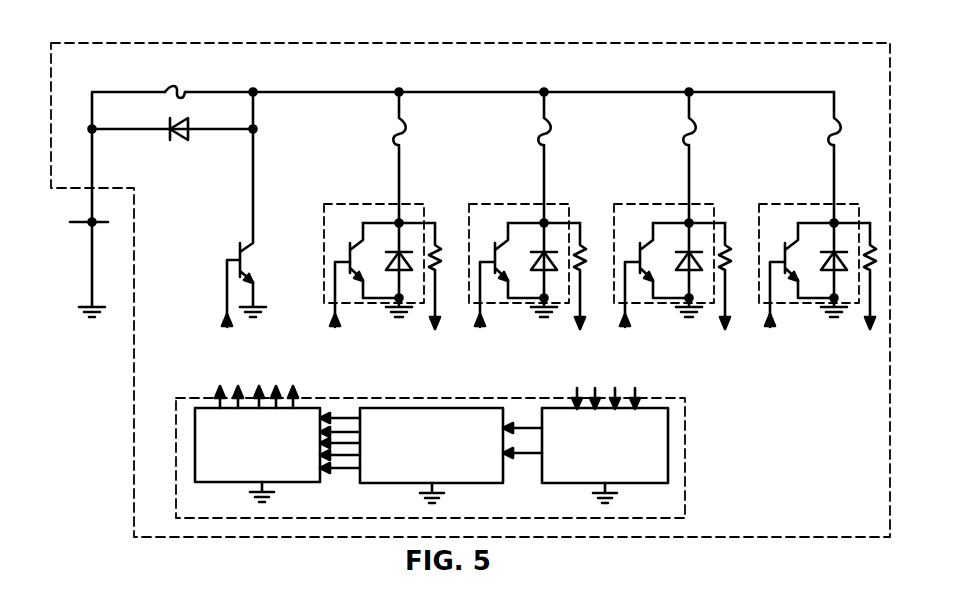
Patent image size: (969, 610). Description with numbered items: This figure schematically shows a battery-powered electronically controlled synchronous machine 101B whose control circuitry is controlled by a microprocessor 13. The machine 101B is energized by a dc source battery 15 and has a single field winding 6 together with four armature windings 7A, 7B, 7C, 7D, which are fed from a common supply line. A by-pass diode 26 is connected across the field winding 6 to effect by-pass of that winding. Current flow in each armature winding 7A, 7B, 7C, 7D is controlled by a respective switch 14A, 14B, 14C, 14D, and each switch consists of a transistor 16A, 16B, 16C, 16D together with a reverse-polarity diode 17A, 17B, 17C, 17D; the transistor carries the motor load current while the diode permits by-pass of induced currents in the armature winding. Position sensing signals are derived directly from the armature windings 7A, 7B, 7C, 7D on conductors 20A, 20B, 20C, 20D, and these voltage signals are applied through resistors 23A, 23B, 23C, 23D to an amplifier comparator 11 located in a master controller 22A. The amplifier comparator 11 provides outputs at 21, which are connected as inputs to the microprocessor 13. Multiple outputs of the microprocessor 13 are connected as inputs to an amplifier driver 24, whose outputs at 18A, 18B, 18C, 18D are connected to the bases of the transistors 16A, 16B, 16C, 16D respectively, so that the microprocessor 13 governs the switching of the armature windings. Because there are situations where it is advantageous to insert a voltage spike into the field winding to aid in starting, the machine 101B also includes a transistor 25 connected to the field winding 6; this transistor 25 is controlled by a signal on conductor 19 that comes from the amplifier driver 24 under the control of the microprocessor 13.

The field winding 6 is at (184, 89).
The by-pass diode 26 is at (185, 136).
The battery 15 is at (75, 224).
The transistor 25 is at (249, 246).
The conductor 19 is at (225, 287).
The armature winding 7A is at (402, 141).
The armature winding 7B is at (547, 141).
The armature winding 7C is at (692, 141).
The armature winding 7D is at (837, 141).
The switch 14A is at (366, 203).
The switch 14B is at (511, 203).
The switch 14C is at (656, 203).
The switch 14D is at (801, 203).
The transistor 16A is at (354, 241).
The transistor 16B is at (499, 241).
The transistor 16C is at (644, 241).
The transistor 16D is at (789, 241).
The reverse-polarity diode 17A is at (390, 275).
The reverse-polarity diode 17B is at (535, 275).
The reverse-polarity diode 17C is at (680, 275).
The reverse-polarity diode 17D is at (825, 275).
The resistor 23A is at (437, 247).
The resistor 23B is at (582, 247).
The resistor 23C is at (727, 247).
The resistor 23D is at (872, 257).
The amplifier driver output 18A is at (332, 304).
The amplifier driver output 18B is at (470, 318).
The amplifier driver output 18C is at (622, 315).
The amplifier driver output 18D is at (763, 313).
The conductor 20A is at (428, 313).
The conductor 20B is at (573, 313).
The conductor 20C is at (718, 313).
The conductor 20D is at (863, 323).
The electronically controlled synchronous machine 101B is at (133, 405).
The master controller 22A is at (686, 480).
The amplifier driver 24 is at (303, 480).
The microprocessor 13 is at (458, 483).
The outputs 21 is at (525, 456).
The amplifier comparator 11 is at (646, 480).